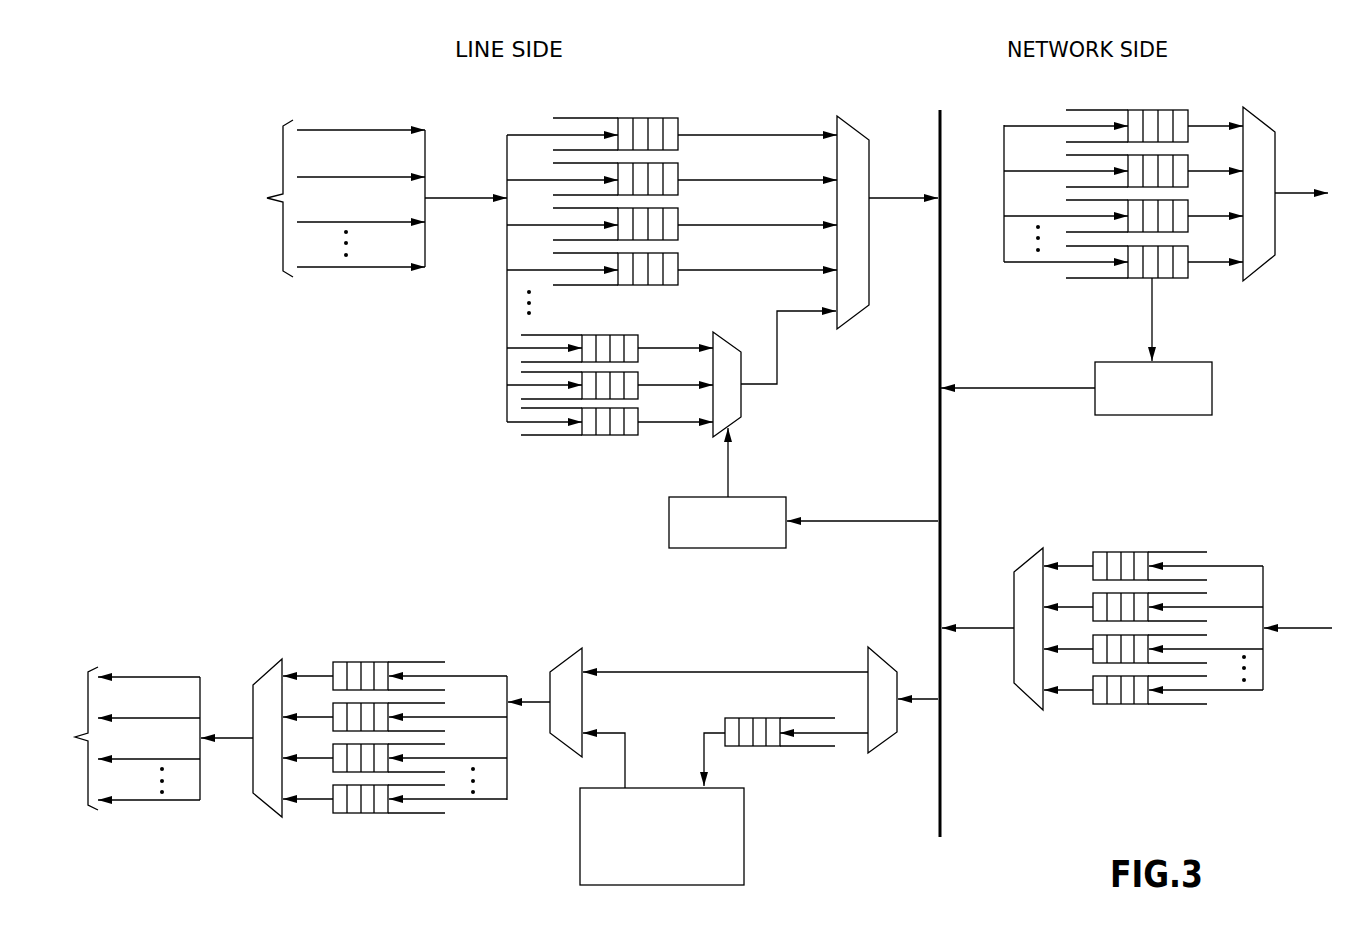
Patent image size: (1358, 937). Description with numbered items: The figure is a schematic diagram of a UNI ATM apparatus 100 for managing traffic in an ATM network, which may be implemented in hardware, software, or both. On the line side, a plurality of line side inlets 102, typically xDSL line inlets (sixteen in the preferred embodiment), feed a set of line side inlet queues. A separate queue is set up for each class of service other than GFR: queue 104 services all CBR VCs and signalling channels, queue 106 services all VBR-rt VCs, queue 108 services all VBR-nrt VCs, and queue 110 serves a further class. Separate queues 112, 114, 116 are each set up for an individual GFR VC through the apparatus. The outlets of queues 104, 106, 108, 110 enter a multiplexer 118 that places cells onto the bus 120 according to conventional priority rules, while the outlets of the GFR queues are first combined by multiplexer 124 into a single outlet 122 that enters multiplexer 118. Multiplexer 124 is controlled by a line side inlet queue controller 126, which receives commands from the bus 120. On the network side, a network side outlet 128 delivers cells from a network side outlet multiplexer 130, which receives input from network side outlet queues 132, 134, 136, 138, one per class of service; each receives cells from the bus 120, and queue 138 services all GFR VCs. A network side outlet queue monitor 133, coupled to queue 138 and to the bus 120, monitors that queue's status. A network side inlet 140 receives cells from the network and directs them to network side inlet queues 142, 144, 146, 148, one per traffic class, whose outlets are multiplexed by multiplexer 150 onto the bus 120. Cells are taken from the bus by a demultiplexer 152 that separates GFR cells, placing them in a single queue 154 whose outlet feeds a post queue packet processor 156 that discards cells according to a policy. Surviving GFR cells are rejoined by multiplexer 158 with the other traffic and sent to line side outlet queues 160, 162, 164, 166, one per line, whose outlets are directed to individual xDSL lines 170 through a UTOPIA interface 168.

The apparatus 100 is at (1080, 798).
The line side inlets 102 is at (305, 198).
The line side inlet queue 104 is at (653, 117).
The line side inlet queue 106 is at (679, 170).
The line side inlet queue 108 is at (679, 215).
The line side inlet queue 110 is at (679, 260).
The line side inlet queue 112 is at (543, 333).
The line side inlet queue 114 is at (615, 398).
The line side inlet queue 116 is at (540, 436).
The multiplexer 118 is at (853, 122).
The bus 120 is at (942, 342).
The single outlet 122 is at (800, 310).
The multiplexer 124 is at (745, 392).
The line side inlet queue controller 126 is at (669, 530).
The network side outlet 128 is at (1295, 195).
The network side outlet multiplexer 130 is at (1258, 113).
The network side outlet queue 132 is at (1113, 108).
The network side outlet queue monitor 133 is at (1213, 387).
The network side outlet queue 134 is at (1163, 153).
The network side outlet queue 136 is at (1163, 233).
The network side outlet queue 138 is at (1087, 278).
The network side inlet 140 is at (1307, 632).
The network side inlet queue 142 is at (1113, 550).
The network side inlet queue 144 is at (1175, 592).
The network side inlet queue 146 is at (1175, 664).
The network side inlet queue 148 is at (1113, 705).
The multiplexer 150 is at (1030, 548).
The demultiplexer 152 is at (878, 653).
The queue 154 is at (757, 717).
The post queue packet processor 156 is at (745, 832).
The multiplexer 158 is at (562, 650).
The line side outlet queue 160 is at (353, 660).
The line side outlet queue 162 is at (417, 700).
The line side outlet queue 164 is at (413, 775).
The line side outlet queue 166 is at (355, 816).
The UTOPIA interface 168 is at (268, 662).
The xDSL lines 170 is at (73, 735).